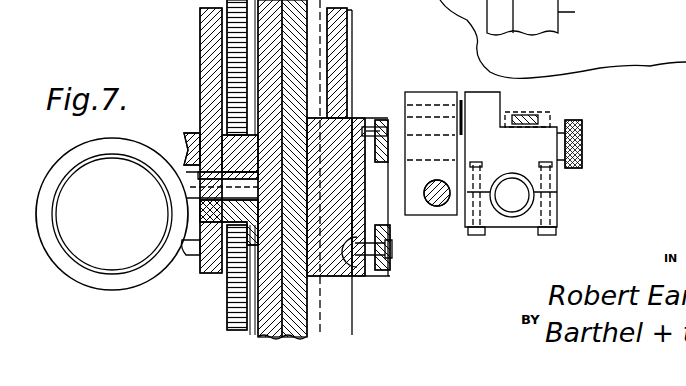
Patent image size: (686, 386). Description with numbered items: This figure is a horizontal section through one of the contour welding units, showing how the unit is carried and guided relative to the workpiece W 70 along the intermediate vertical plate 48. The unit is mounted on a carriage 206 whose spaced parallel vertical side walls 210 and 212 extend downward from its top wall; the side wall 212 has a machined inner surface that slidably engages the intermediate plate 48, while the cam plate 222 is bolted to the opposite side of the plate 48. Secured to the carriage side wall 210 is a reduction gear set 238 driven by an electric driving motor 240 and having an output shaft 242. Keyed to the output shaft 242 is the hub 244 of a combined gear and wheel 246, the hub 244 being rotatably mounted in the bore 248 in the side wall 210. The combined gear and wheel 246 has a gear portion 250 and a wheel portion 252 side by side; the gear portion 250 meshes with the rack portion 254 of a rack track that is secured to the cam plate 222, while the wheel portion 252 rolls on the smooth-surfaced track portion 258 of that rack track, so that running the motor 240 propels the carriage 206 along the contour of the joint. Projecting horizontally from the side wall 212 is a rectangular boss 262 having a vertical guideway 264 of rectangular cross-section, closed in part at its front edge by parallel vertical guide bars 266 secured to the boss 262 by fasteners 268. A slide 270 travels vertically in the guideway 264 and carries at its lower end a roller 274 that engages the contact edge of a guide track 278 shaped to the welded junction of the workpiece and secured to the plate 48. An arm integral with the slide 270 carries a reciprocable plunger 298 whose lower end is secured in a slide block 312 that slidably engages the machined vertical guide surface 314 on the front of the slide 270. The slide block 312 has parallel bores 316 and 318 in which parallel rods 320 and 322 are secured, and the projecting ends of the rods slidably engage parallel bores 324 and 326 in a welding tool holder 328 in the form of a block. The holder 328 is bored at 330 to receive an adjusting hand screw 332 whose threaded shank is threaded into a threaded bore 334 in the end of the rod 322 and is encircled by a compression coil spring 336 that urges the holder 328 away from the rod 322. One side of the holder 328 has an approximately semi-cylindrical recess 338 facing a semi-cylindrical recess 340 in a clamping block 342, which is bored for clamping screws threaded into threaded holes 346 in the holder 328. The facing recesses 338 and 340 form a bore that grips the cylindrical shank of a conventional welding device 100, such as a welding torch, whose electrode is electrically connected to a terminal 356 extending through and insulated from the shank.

The intermediate vertical plate 48 is at (294, 331).
The workpiece support 70 is at (564, 17).
The welding device 100 is at (521, 241).
The carriage 206 is at (199, 13).
The carriage side wall 210 is at (215, 35).
The carriage side wall 212 is at (337, 27).
The cam plate 222 is at (269, 53).
The reduction gear set 238 is at (188, 255).
The electric driving motor 240 is at (88, 291).
The output shaft 242 is at (205, 196).
The hub 244 is at (200, 177).
The combined gear and wheel 246 is at (197, 140).
The bore 248 is at (210, 214).
The gear portion 250 is at (233, 262).
The wheel portion 252 is at (258, 335).
The rack portion 254 is at (238, 67).
The track portion 258 is at (256, 93).
The rectangular boss 262 is at (384, 270).
The guideway 264 is at (357, 272).
The guide bars 266 is at (392, 233).
The fasteners 268 is at (392, 254).
The slide 270 is at (380, 227).
The roller 274 is at (333, 283).
The guide track 278 is at (352, 38).
The plunger 298 is at (458, 240).
The slide block 312 is at (417, 92).
The guide surface 314 is at (437, 184).
The bore 316 is at (392, 130).
The bore 318 is at (392, 115).
The rod 320 is at (461, 100).
The rod 322 is at (470, 238).
The bore 324 is at (480, 125).
The bore 326 is at (500, 125).
The welding tool holder 328 is at (549, 124).
The bore 330 is at (565, 125).
The adjusting hand screw 332 is at (585, 145).
The threaded bore 334 is at (558, 230).
The compression coil spring 336 is at (530, 127).
The semi-cylindrical recess 338 is at (560, 175).
The semi-cylindrical recess 340 is at (533, 235).
The clamping block 342 is at (558, 214).
The threaded holes 346 is at (565, 185).
The terminal 356 is at (560, 206).